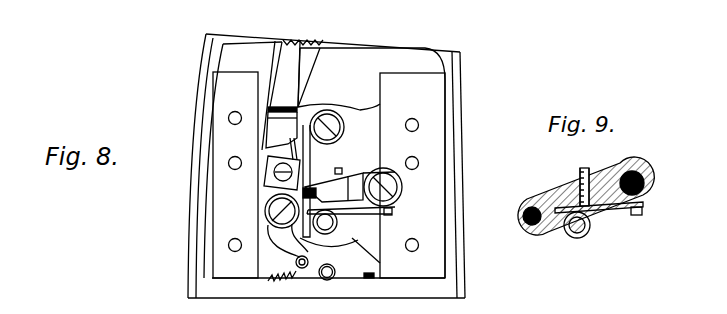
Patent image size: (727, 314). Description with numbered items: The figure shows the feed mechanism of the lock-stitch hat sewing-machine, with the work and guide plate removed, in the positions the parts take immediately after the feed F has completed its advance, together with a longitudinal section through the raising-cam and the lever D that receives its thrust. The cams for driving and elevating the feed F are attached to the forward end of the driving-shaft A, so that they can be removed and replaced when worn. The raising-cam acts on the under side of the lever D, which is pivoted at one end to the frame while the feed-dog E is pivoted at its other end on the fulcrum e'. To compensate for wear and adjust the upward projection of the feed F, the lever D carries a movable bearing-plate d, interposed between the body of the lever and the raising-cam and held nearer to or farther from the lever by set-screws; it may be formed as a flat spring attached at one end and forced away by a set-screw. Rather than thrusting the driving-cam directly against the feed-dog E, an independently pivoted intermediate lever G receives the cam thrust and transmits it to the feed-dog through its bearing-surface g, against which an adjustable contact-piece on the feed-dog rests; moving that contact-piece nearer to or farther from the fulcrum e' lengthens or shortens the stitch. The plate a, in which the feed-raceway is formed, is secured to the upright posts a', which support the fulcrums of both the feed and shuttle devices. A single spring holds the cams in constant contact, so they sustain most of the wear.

In FIG. 8, the feed F is at (292, 83).
In FIG. 8, the plate a is at (371, 164).
In FIG. 8, the upright posts a' is at (329, 175).
In FIG. 8, the feed-dog E is at (279, 127).
In FIG. 8, the intermediate lever G is at (313, 181).
In FIG. 8, the bearing-surface g is at (318, 165).
In FIG. 8, the lever D is at (353, 191).
In FIG. 8, the fulcrum e' is at (286, 237).
In FIG. 8, the stop b is at (330, 199).
In FIG. 8, the driving-shaft A is at (325, 222).
In FIG. 9, the driving-shaft A is at (600, 214).
In FIG. 8, the bearing-plate d is at (358, 211).
In FIG. 9, the bearing-plate d is at (636, 215).
In FIG. 8, the screw holder c is at (279, 175).
In FIG. 9, the screw holder c is at (565, 232).